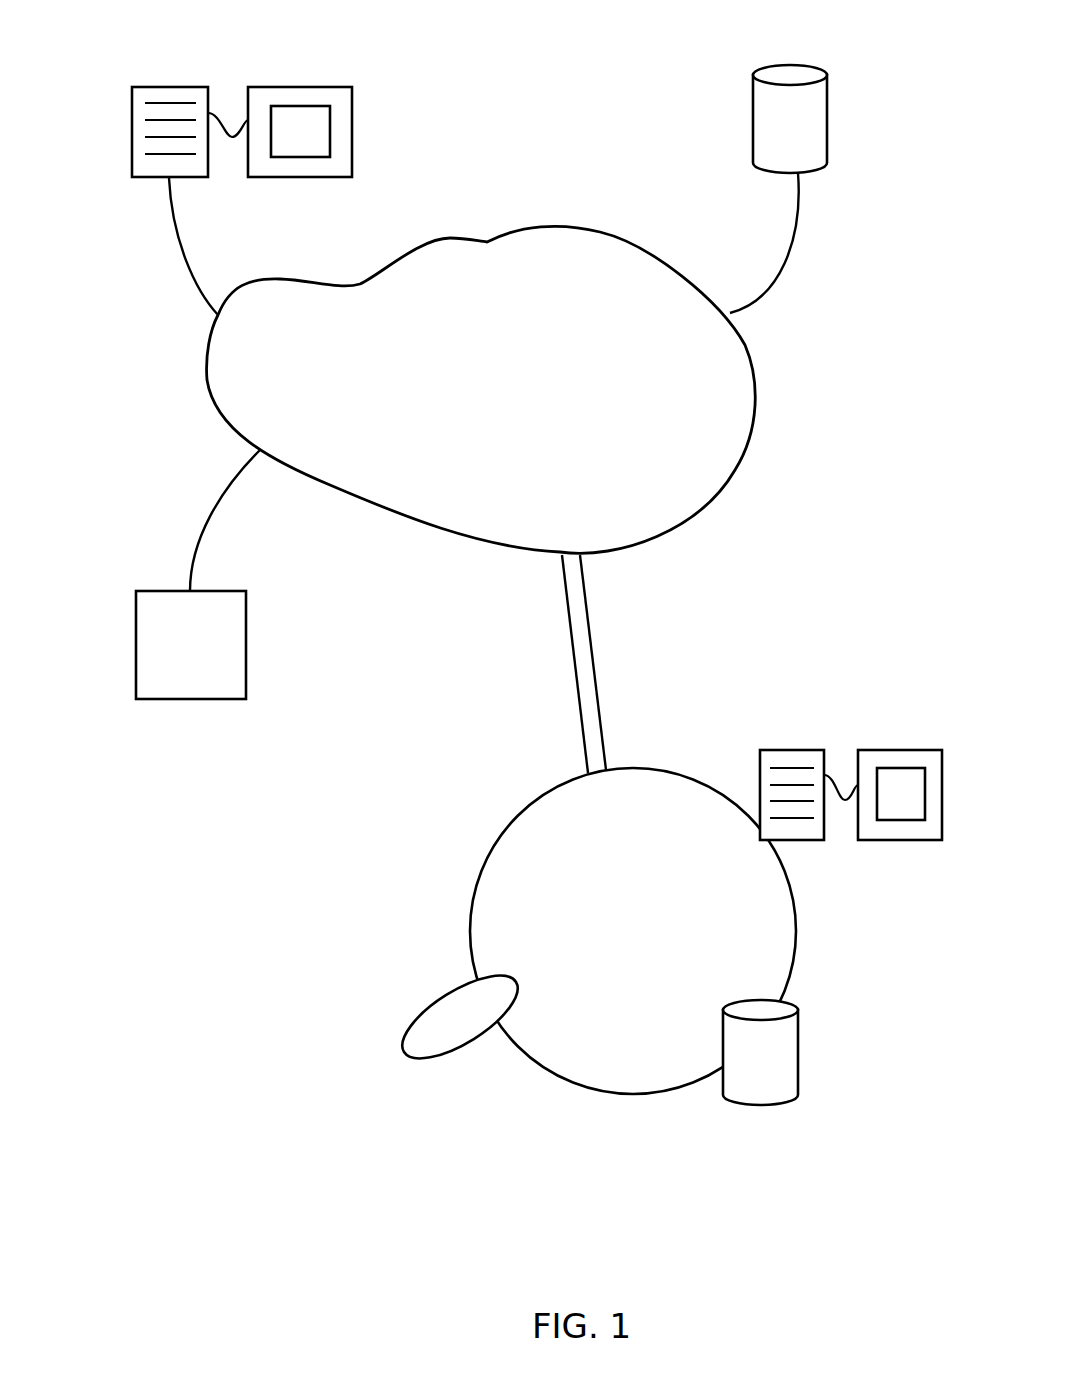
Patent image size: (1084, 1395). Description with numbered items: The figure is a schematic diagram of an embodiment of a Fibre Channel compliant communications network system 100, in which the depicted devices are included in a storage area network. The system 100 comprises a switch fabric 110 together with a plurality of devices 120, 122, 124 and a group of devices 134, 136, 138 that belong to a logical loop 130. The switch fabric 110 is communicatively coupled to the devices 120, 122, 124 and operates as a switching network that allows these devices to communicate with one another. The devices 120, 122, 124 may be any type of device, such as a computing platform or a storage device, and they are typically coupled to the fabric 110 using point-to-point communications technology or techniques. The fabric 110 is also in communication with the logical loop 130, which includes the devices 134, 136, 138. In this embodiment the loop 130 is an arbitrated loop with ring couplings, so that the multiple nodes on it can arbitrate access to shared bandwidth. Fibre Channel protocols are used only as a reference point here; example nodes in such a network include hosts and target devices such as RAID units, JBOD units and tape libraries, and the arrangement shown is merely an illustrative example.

The communications network system 100 is at (336, 1199).
The switch fabric 110 is at (481, 389).
The device 120 is at (170, 87).
The device 122 is at (187, 699).
The device 124 is at (828, 122).
The logical loop 130 is at (470, 849).
The device 134 is at (423, 1058).
The device 136 is at (760, 1110).
The device 138 is at (791, 750).